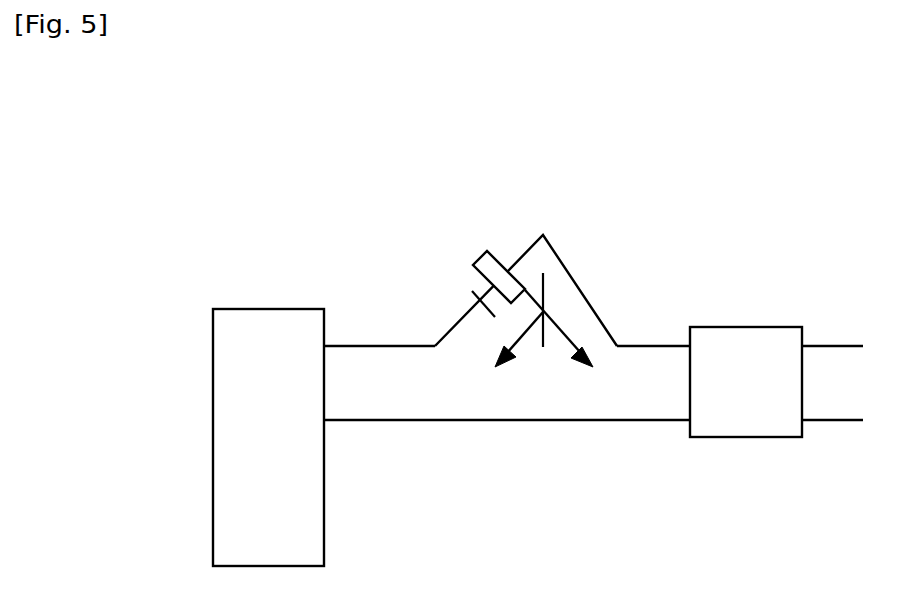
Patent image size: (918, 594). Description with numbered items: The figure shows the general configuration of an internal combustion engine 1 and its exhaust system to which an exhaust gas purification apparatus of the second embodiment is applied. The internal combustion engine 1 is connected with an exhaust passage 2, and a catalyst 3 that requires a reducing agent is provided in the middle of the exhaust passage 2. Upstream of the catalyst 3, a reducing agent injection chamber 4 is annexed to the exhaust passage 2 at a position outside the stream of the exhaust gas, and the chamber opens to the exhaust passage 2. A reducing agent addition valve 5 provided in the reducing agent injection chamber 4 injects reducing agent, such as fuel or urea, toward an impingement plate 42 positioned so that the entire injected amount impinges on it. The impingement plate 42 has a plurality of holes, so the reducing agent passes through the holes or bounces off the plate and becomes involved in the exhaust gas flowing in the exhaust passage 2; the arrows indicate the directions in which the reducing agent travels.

The internal combustion engine 1 is at (324, 528).
The exhaust passage 2 is at (547, 420).
The catalyst 3 is at (745, 437).
The reducing agent injection chamber 4 is at (478, 303).
The reducing agent addition valve 5 is at (488, 249).
The impingement plate 42 is at (544, 299).